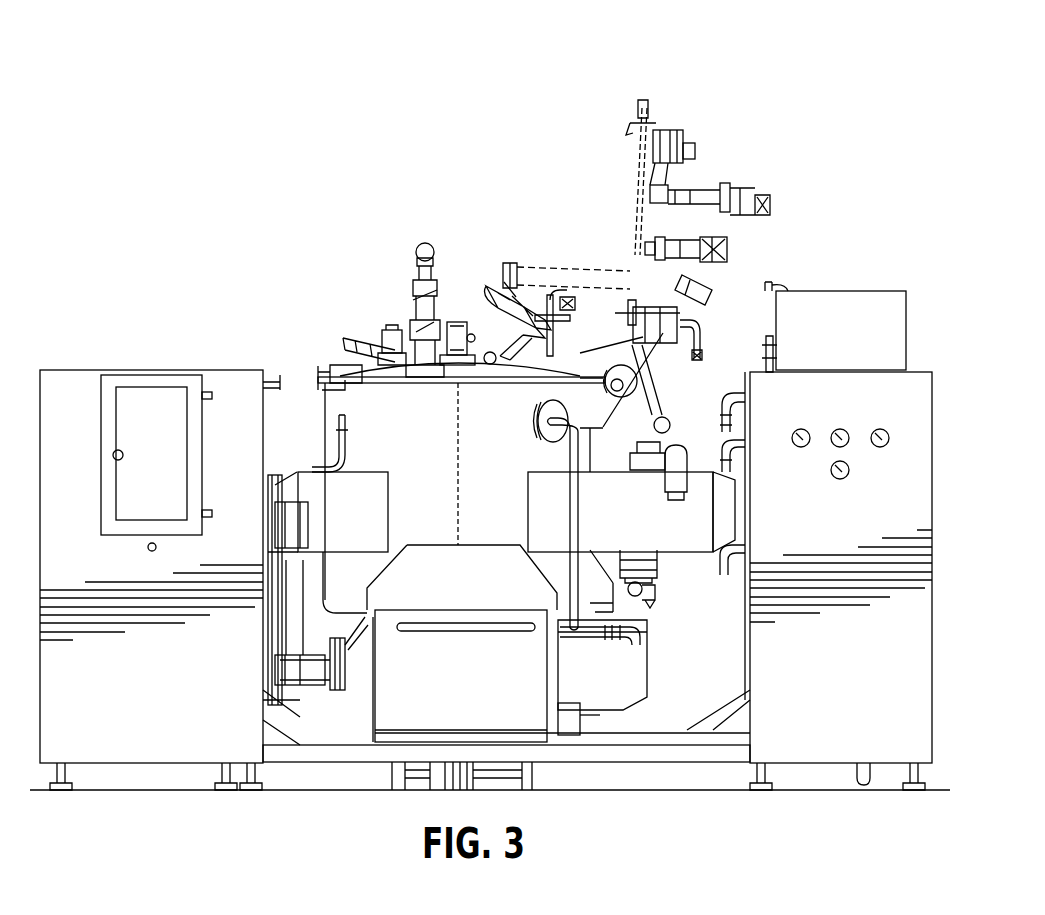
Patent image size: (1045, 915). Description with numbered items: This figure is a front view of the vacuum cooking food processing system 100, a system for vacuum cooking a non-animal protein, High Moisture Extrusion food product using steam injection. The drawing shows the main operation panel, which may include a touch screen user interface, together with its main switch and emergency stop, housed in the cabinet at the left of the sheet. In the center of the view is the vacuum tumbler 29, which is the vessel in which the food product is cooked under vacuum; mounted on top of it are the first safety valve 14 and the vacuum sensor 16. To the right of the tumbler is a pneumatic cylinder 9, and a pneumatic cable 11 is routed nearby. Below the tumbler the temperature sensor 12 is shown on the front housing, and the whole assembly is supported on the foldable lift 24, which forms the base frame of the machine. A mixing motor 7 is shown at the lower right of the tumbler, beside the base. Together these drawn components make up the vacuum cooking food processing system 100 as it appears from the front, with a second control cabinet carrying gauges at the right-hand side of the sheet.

The vacuum cooking food processing system 100 is at (723, 108).
The first safety valve 14 is at (385, 333).
The vacuum tumbler 29 is at (410, 397).
The vacuum sensor 16 is at (462, 355).
The pneumatic cylinder 9 is at (645, 418).
The pneumatic cable 11 is at (683, 468).
The temperature sensor 12 is at (383, 618).
The foldable lift 24 is at (528, 718).
The mixing motor 7 is at (623, 690).